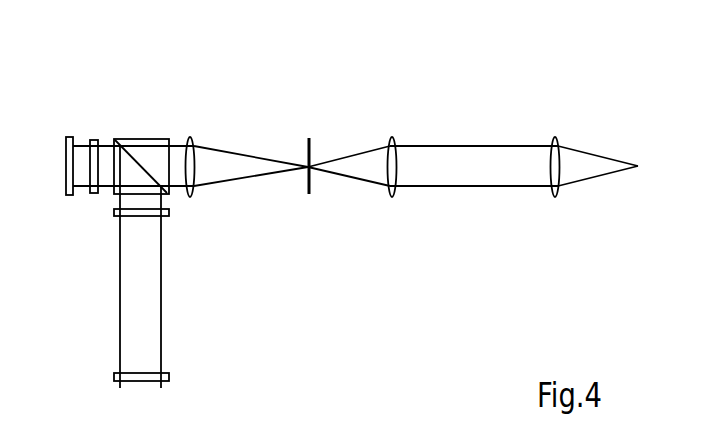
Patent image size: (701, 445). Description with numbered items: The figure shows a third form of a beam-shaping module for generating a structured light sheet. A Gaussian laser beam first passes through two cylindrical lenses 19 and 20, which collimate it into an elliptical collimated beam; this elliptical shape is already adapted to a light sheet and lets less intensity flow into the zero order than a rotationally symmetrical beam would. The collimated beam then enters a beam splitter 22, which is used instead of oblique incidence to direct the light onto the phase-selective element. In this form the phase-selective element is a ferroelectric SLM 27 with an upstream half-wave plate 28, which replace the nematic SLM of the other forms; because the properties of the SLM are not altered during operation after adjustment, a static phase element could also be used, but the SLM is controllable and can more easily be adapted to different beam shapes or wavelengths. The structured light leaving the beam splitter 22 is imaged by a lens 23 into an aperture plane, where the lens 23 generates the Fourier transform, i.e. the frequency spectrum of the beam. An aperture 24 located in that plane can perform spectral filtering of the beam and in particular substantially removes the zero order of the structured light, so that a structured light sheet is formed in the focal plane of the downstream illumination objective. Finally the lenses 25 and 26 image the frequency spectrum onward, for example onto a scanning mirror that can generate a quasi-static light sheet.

The cylindrical lens 19 is at (170, 375).
The cylindrical lens 20 is at (170, 217).
The beam splitter 22 is at (147, 138).
The lens 23 is at (193, 138).
The aperture 24 is at (312, 137).
The lens 25 is at (394, 137).
The lens 26 is at (557, 137).
The ferroelectric SLM 27 is at (70, 197).
The λ/2 plate 28 is at (96, 138).